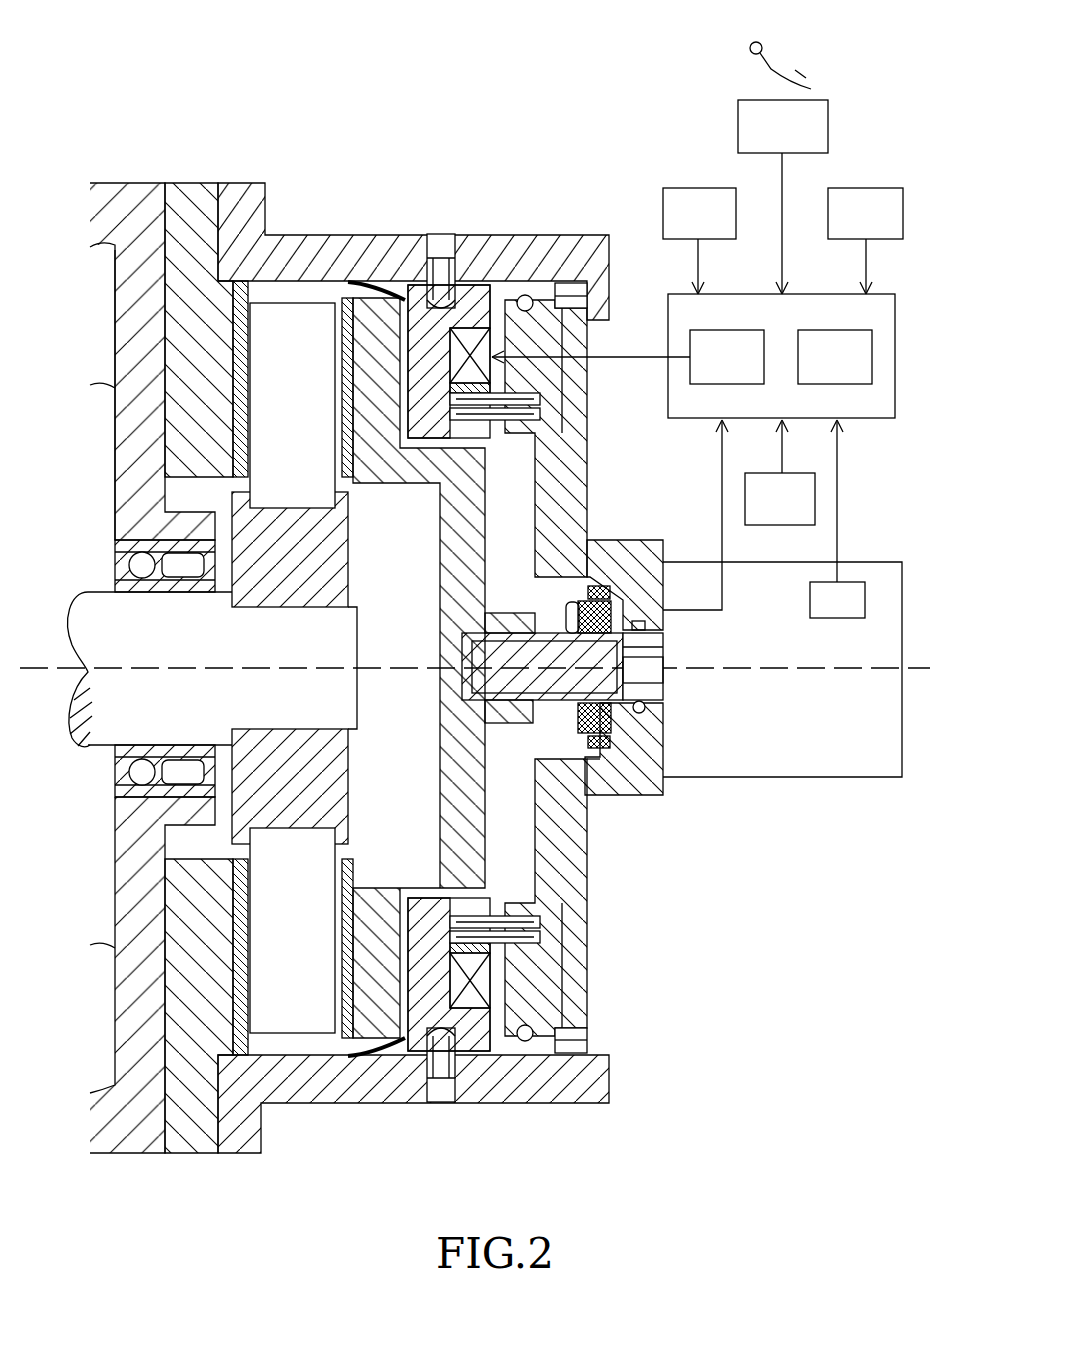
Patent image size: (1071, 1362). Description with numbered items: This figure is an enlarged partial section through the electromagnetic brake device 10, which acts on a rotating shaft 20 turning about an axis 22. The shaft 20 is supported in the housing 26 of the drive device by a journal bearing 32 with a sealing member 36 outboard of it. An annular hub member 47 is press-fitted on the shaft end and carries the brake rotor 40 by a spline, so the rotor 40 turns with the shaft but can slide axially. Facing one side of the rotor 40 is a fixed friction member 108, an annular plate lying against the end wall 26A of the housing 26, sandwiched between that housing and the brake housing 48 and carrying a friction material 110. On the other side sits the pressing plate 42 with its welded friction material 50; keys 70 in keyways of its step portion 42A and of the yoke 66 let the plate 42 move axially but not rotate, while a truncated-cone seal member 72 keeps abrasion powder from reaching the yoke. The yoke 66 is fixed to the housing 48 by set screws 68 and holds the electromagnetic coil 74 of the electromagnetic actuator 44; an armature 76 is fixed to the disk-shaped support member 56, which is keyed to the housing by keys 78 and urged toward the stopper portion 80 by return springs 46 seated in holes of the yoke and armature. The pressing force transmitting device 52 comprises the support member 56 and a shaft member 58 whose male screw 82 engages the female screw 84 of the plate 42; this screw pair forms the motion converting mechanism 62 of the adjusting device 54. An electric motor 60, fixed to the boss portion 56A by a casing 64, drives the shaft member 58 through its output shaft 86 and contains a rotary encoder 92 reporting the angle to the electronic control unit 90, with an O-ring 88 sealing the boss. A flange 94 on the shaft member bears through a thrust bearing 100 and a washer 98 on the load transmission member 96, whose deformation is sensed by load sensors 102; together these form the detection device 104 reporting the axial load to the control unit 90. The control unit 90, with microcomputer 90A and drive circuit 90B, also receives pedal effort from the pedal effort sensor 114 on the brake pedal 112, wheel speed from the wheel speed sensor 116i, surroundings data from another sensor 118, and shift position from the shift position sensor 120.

The electromagnetic brake device 10 is at (550, 208).
The rotating shaft 20 is at (78, 623).
The axis 22 is at (42, 672).
The housing 26 is at (128, 192).
The end wall 26A is at (120, 300).
The journal bearing 32 is at (125, 568).
The sealing member 36 is at (196, 745).
The brake rotor 40 is at (296, 315).
The pressing plate 42 is at (440, 552).
The step portion 42A is at (342, 886).
The electromagnetic actuator 44 is at (587, 957).
The return springs 46 is at (548, 425).
The hub member 47 is at (296, 730).
The housing 48 is at (540, 1102).
The friction material 50 is at (340, 388).
The pressing force transmitting device 52 is at (600, 482).
The adjusting device 54 is at (673, 800).
The support member 56 is at (590, 896).
The boss portion 56A is at (605, 790).
The shaft member 58 is at (478, 693).
The electric motor 60 is at (797, 778).
The motion converting mechanism 62 is at (470, 615).
The casing 64 is at (876, 778).
The yoke 66 is at (470, 282).
The set screws 68 is at (437, 268).
The key 70 is at (405, 895).
The seal member 72 is at (383, 1058).
The electromagnetic coil 74 is at (440, 985).
The armature 76 is at (560, 1000).
The key 78 is at (570, 1052).
The stopper portion 80 is at (598, 302).
The male screw 82 is at (470, 714).
The female screw 84 is at (470, 650).
The output shaft 86 is at (665, 660).
The O-ring 88 is at (660, 712).
The electronic control unit 90 is at (850, 420).
The microcomputer 90A is at (715, 330).
The drive circuit 90B is at (822, 330).
The rotary encoder 92 is at (833, 620).
The flange 94 is at (563, 607).
The load transmission member 96 is at (606, 583).
The washer 98 is at (665, 683).
The thrust bearing 100 is at (578, 720).
The load sensors 102 is at (665, 752).
The detection device 104 is at (622, 583).
The fixed friction member 108 is at (185, 200).
The friction material 110 is at (232, 352).
The brake pedal 112 is at (772, 68).
The pedal effort sensor 114 is at (825, 120).
The wheel speed sensor 116i is at (693, 188).
The sensor 118 is at (864, 188).
The shift position sensor 120 is at (815, 500).